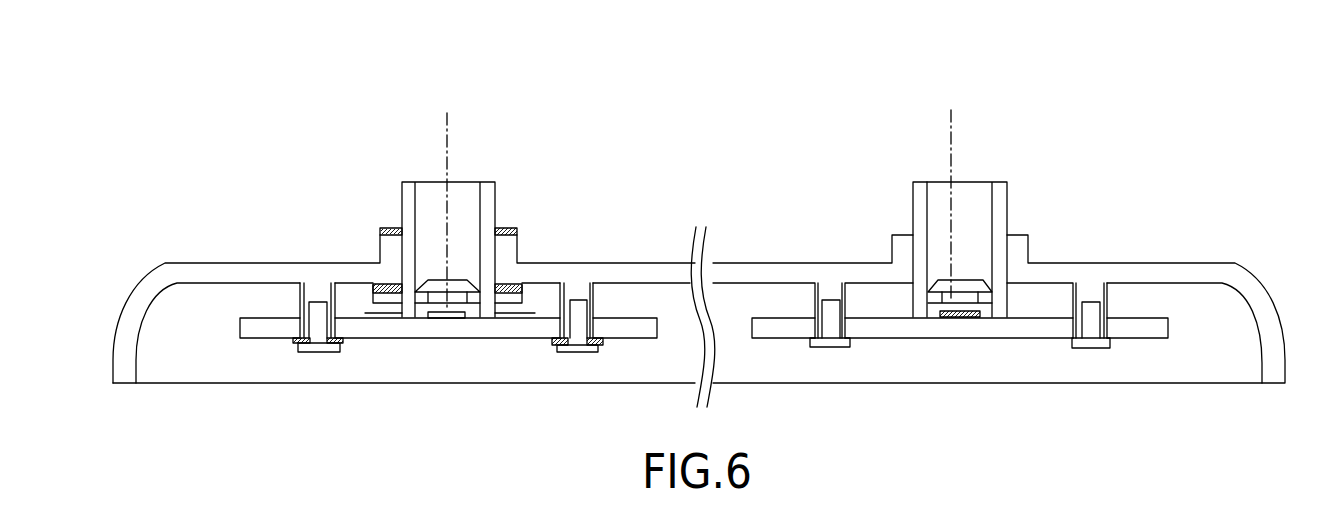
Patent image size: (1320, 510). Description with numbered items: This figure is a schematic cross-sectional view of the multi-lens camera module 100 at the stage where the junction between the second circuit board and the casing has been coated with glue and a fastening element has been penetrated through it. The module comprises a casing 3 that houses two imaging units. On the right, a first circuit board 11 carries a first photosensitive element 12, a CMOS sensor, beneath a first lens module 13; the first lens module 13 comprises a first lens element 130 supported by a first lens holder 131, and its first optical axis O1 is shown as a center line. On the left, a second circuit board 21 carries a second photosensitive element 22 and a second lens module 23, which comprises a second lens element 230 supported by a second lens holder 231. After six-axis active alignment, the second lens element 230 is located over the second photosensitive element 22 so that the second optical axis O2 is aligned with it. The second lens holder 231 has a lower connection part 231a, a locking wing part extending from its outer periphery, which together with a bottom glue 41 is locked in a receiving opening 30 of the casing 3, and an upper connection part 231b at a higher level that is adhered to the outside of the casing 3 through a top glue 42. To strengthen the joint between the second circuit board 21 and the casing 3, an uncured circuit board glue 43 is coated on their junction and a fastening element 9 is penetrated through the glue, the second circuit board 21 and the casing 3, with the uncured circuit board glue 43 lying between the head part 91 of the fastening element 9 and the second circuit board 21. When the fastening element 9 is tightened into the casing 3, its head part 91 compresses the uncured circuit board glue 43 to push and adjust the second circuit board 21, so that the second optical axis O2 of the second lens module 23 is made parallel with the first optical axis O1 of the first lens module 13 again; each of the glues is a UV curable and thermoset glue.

The multi-lens camera module 100 is at (293, 57).
The casing 3 is at (1172, 273).
The first circuit board 11 is at (1125, 328).
The first photosensitive element 12 is at (942, 311).
The first lens module 13 is at (965, 190).
The first lens element 130 is at (960, 280).
The first lens holder 131 is at (915, 205).
The second circuit board 21 is at (475, 328).
The second photosensitive element 22 is at (447, 313).
The second lens module 23 is at (225, 187).
The second lens element 230 is at (458, 284).
The second lens holder 231 is at (410, 187).
The lower connection part 231a is at (528, 297).
The upper connection part 231b is at (402, 227).
The receiving opening 30 is at (463, 199).
The bottom glue 41 is at (510, 282).
The top glue 42 is at (382, 225).
The uncured circuit board glue 43 is at (297, 340).
The fastening element 9 is at (312, 353).
The head part 91 is at (338, 350).
The first optical axis O1 is at (951, 190).
The second optical axis O2 is at (448, 197).